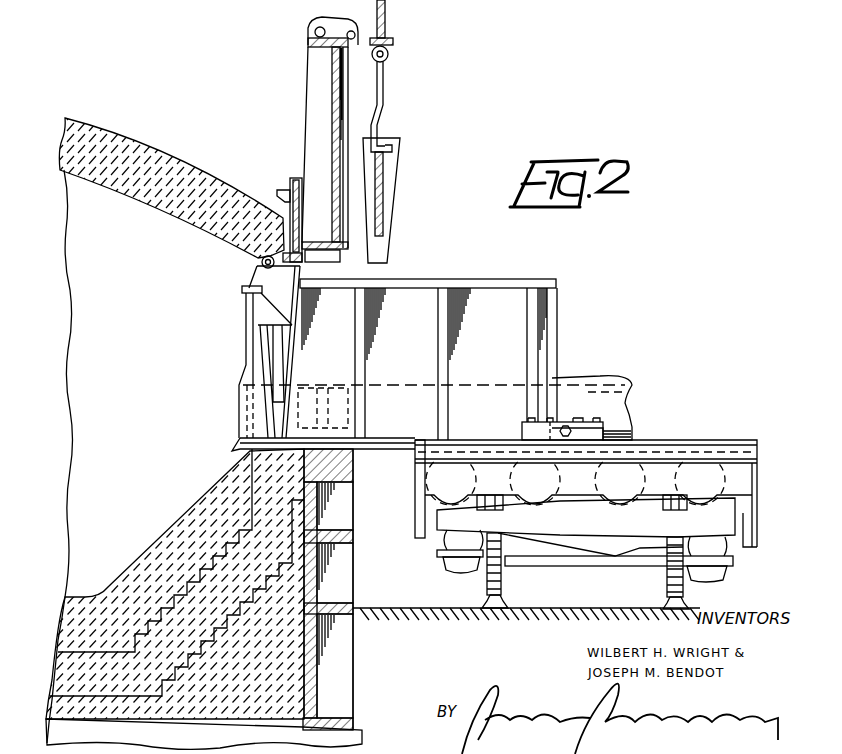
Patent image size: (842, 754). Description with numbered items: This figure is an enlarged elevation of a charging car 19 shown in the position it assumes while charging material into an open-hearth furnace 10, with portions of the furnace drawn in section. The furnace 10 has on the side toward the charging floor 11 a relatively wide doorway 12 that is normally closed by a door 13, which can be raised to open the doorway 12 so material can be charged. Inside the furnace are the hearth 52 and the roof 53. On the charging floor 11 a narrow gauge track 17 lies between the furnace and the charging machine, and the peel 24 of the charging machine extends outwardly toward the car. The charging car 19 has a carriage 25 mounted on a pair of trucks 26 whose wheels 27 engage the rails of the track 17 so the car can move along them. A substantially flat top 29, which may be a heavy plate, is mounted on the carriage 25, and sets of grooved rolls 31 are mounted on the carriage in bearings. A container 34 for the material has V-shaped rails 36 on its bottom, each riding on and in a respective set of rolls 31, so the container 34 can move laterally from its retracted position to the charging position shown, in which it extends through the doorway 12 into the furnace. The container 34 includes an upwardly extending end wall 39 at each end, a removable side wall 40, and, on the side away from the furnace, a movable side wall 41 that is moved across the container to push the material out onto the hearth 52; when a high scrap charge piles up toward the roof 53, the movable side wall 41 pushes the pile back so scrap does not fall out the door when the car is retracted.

The open-hearth furnace 10 is at (354, 524).
The charging floor 11 is at (408, 592).
The doorway 12 is at (258, 270).
The door 13 is at (302, 101).
The narrow gauge track 17 is at (506, 601).
The charging car 19 is at (705, 441).
The peel 24 is at (605, 378).
The carriage 25 is at (413, 503).
The truck 26 is at (733, 561).
The wheel 27 is at (503, 577).
The flat top 29 is at (745, 481).
The roll 31 is at (622, 506).
The container 34 is at (558, 312).
The V-shaped rail 36 is at (232, 451).
The end wall 39 is at (488, 283).
The removable side wall 40 is at (393, 187).
The movable side wall 41 is at (246, 308).
The hearth 52 is at (165, 532).
The roof 53 is at (155, 206).